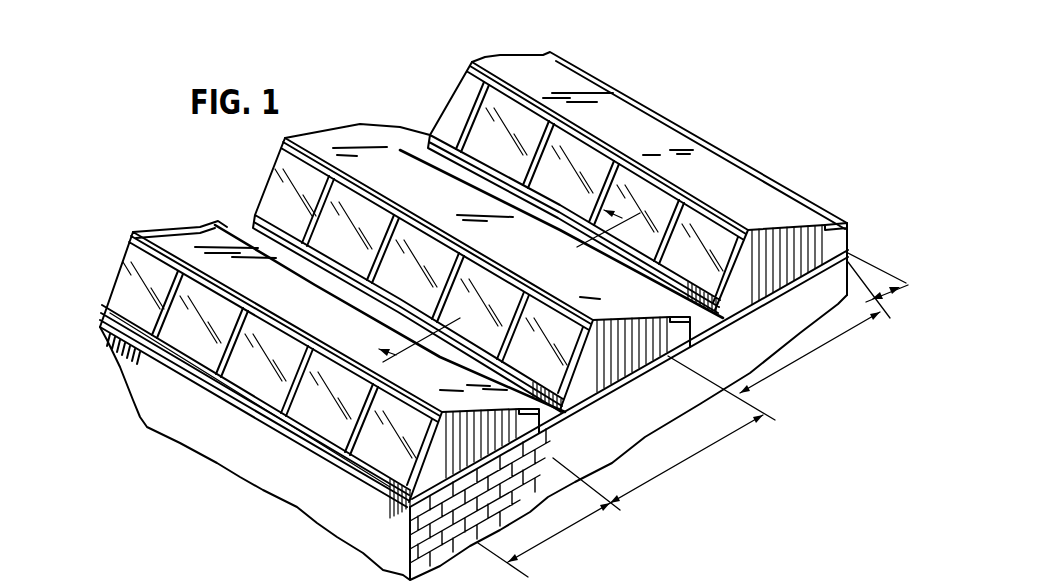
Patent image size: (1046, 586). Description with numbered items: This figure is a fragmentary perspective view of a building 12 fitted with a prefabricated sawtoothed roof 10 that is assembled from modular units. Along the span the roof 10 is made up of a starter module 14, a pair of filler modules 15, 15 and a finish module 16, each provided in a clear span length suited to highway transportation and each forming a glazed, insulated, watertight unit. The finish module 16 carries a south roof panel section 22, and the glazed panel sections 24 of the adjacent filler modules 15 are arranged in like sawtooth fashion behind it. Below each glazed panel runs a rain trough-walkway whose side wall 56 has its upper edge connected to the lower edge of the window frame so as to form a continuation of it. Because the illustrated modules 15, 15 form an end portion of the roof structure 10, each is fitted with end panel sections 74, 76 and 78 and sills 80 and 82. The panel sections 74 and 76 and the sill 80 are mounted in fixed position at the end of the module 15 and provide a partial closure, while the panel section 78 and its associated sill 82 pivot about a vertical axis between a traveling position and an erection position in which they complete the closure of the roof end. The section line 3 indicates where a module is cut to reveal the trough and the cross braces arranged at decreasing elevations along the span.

The roof system 10 is at (673, 106).
The building 12 is at (157, 412).
The starter module 14 is at (878, 294).
The filler module 15 is at (787, 358).
The finish module 16 is at (620, 496).
The south roof panel section 22 is at (128, 285).
The further glazing panel 24 is at (503, 122).
The side wall 56 is at (365, 468).
The end panel section 74 is at (532, 433).
The end panel section 76 is at (587, 400).
The end panel section 78 is at (636, 350).
The sill 80 is at (573, 412).
The sill 82 is at (633, 370).
The section line of FIG. 3 is at (520, 303).